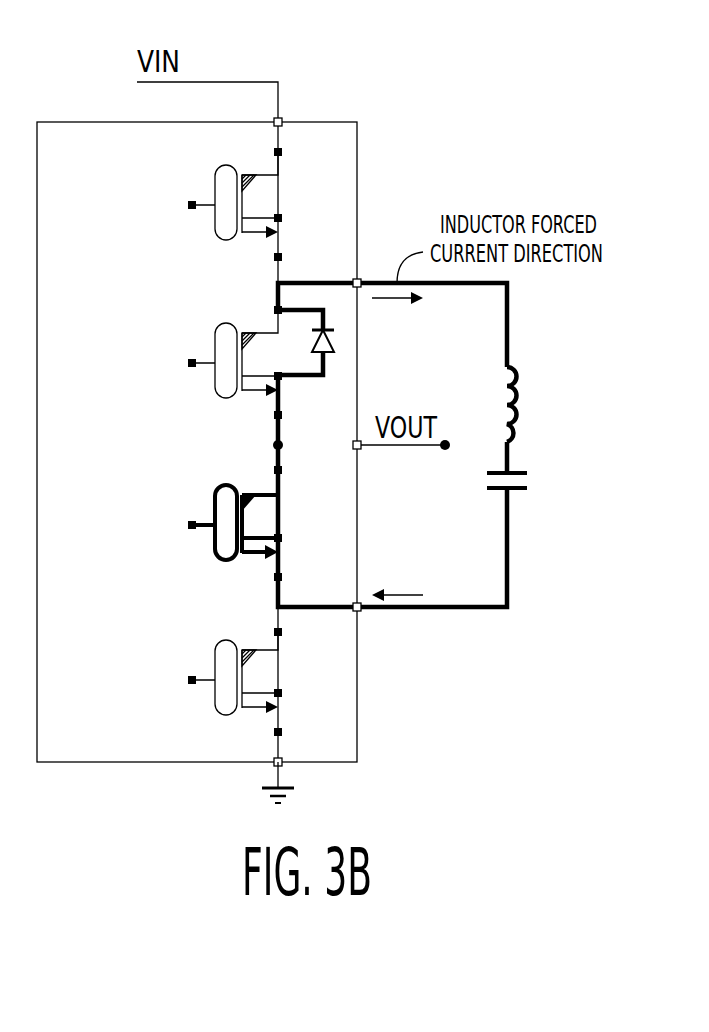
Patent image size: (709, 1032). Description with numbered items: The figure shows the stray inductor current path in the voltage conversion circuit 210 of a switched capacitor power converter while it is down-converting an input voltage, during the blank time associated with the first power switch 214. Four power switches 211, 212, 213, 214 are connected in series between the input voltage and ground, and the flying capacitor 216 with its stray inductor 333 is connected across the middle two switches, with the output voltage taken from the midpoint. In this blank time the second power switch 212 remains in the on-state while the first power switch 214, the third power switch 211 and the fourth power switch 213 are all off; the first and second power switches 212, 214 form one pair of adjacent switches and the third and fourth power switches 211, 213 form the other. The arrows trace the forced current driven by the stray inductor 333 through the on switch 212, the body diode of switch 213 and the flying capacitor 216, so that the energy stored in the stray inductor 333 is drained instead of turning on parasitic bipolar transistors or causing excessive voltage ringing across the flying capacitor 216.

The voltage conversion circuit 210 is at (338, 122).
The power switch 211 is at (167, 679).
The power switch 212 is at (167, 541).
The power switch 213 is at (168, 369).
The power switch 214 is at (167, 218).
The stray inductor 333 is at (517, 397).
The flying capacitor 216 is at (518, 470).